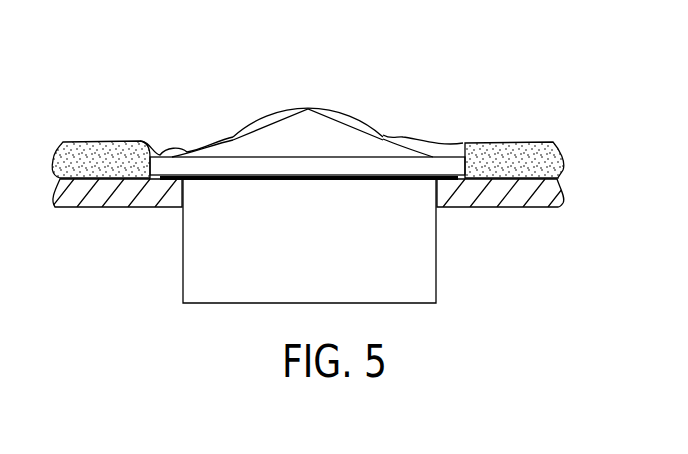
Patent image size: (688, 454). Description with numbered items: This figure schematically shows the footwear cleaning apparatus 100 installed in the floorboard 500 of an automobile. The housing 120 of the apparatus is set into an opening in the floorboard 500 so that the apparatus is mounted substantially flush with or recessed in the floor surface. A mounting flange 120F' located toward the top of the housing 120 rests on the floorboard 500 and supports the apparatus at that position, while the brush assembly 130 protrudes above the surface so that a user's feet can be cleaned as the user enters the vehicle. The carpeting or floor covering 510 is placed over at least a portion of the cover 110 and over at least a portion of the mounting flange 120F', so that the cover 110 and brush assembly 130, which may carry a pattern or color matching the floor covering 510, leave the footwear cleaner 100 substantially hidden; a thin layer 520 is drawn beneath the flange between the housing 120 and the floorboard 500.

The footwear cleaning apparatus 100 is at (360, 86).
The cover 110 is at (231, 136).
The housing 120 is at (429, 283).
The mounting flange 120F' is at (314, 135).
The brush assembly 130 is at (270, 115).
The floorboard 500 is at (491, 208).
The floor covering 510 is at (512, 141).
The adhesive layer 520 is at (205, 181).